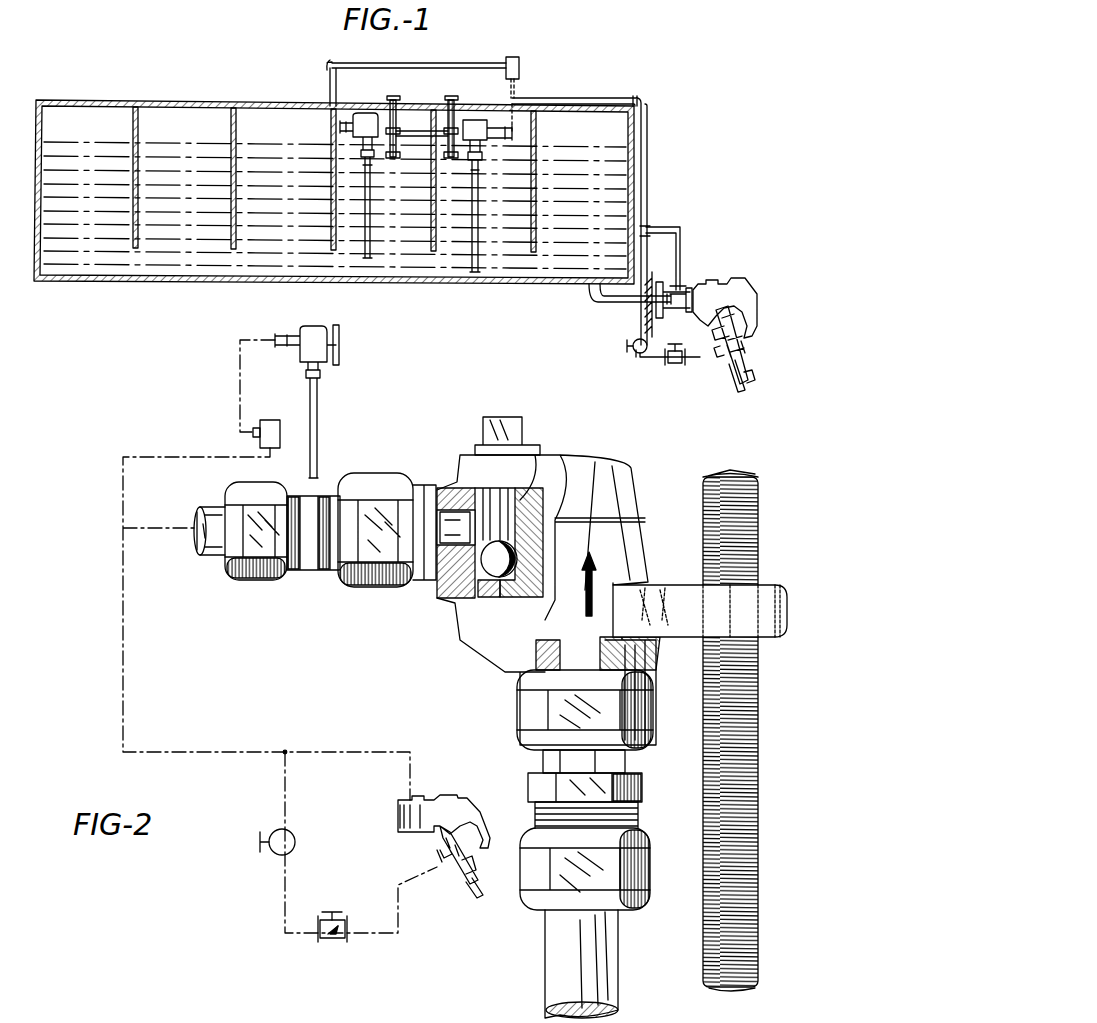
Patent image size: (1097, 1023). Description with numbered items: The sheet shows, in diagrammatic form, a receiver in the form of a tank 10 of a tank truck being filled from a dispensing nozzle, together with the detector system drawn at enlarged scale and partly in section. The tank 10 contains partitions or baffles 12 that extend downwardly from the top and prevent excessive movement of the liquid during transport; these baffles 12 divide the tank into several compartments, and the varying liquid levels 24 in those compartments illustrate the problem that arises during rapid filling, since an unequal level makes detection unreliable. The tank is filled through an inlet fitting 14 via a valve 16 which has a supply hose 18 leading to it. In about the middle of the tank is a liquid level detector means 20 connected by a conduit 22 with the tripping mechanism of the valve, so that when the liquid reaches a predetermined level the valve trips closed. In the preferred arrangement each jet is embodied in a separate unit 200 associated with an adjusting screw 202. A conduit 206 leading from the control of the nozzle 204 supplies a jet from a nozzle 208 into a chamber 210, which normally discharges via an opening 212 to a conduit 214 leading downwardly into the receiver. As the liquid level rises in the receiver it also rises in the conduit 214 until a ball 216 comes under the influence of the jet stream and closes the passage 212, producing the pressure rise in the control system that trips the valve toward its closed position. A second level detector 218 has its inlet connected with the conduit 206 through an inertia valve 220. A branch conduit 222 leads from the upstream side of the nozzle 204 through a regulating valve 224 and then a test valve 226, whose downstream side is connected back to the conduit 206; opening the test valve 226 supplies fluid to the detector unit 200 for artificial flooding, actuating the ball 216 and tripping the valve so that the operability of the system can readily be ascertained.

In FIG. 1, the tank 10 is at (222, 106).
In FIG. 1, the partitions or baffles 12 is at (139, 128).
In FIG. 1, the inlet fitting 14 is at (611, 310).
In FIG. 1, the valve 16 is at (738, 291).
In FIG. 1, the supply hose 18 is at (743, 372).
In FIG. 1, the liquid level detector means 20 is at (421, 96).
In FIG. 1, the conduit 22 is at (650, 110).
In FIG. 1, the liquid levels 24 is at (70, 144).
In FIG. 1, the unit 200 is at (478, 118).
In FIG. 2, the unit 200 is at (636, 492).
In FIG. 1, the adjusting screw 202 is at (394, 116).
In FIG. 2, the adjusting screw 202 is at (702, 540).
In FIG. 2, the nozzle 204 is at (464, 793).
In FIG. 2, the conduit 206 is at (124, 722).
In FIG. 2, the nozzle 208 is at (452, 546).
In FIG. 2, the chamber 210 is at (515, 475).
In FIG. 2, the opening 212 is at (522, 490).
In FIG. 2, the conduit 214 is at (548, 962).
In FIG. 2, the ball 216 is at (490, 578).
In FIG. 1, the second level detector 218 is at (365, 112).
In FIG. 2, the second level detector 218 is at (322, 338).
In FIG. 1, the inertia valve 220 is at (520, 66).
In FIG. 2, the inertia valve 220 is at (272, 420).
In FIG. 2, the branch conduit 222 is at (400, 905).
In FIG. 1, the regulating valve 224 is at (675, 364).
In FIG. 2, the regulating valve 224 is at (332, 942).
In FIG. 1, the test valve 226 is at (640, 355).
In FIG. 2, the test valve 226 is at (296, 842).